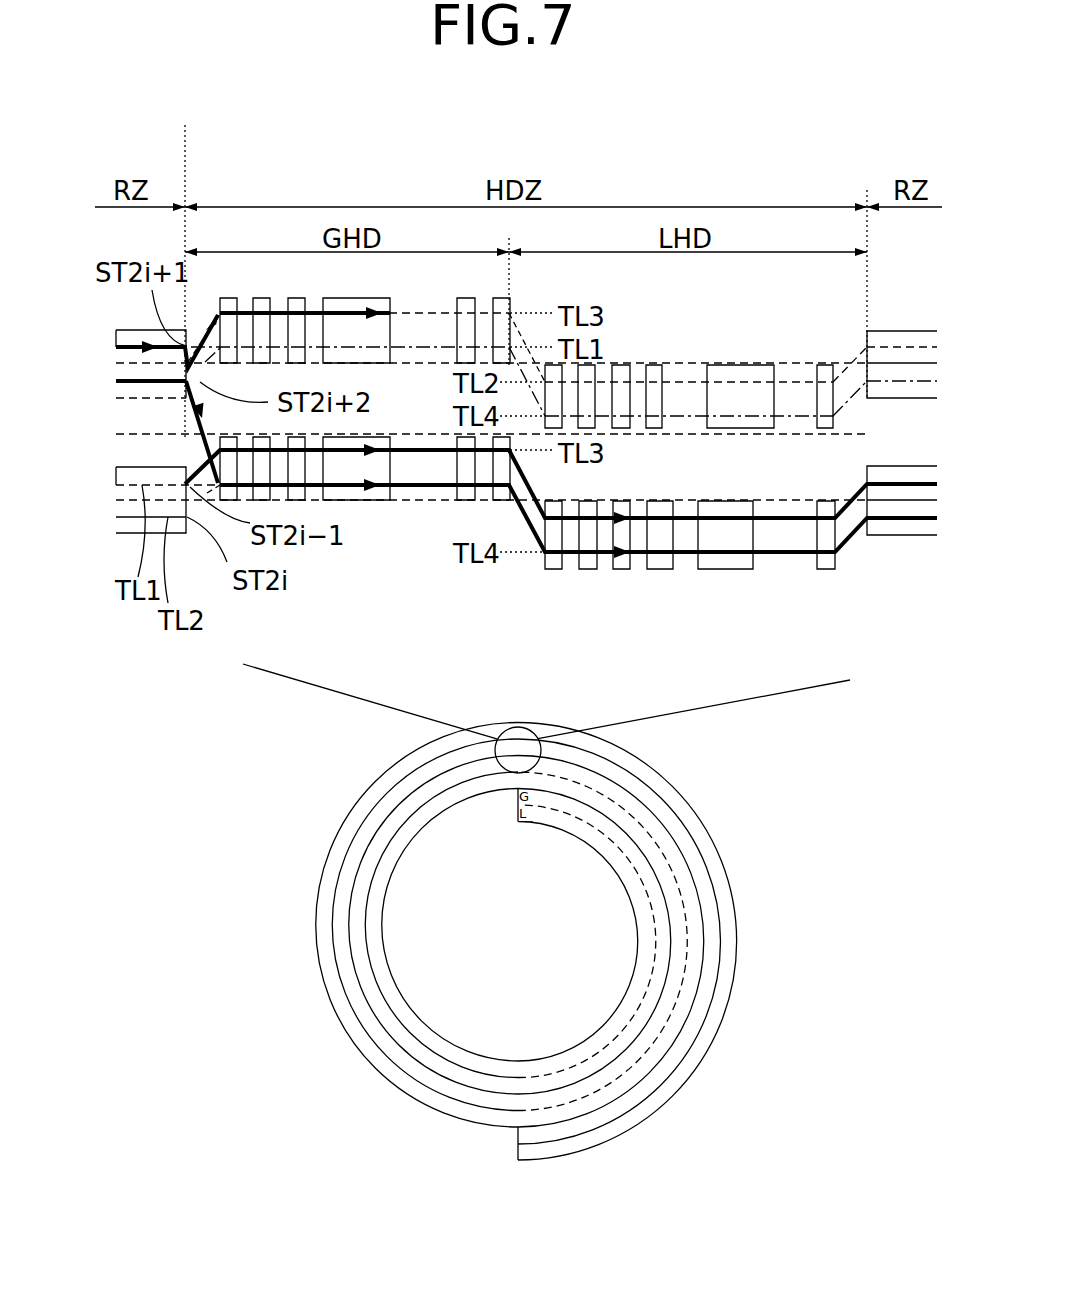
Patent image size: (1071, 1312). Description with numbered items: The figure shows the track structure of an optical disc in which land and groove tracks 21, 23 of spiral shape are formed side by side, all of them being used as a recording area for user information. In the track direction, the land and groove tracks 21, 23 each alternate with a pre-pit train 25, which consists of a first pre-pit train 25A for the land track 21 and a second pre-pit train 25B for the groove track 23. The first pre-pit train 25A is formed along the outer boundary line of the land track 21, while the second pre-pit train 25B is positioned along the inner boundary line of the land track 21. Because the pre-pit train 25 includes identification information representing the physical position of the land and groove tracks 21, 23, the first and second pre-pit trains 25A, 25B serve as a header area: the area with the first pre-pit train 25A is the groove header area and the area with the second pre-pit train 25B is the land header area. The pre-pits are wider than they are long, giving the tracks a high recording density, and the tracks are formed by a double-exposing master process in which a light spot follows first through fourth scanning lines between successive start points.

The land track 21 is at (577, 828).
The groove track 23 is at (550, 802).
The pre-pit train 25 is at (680, 328).
The first pre-pit train 25A is at (360, 300).
The second pre-pit train 25B is at (628, 362).